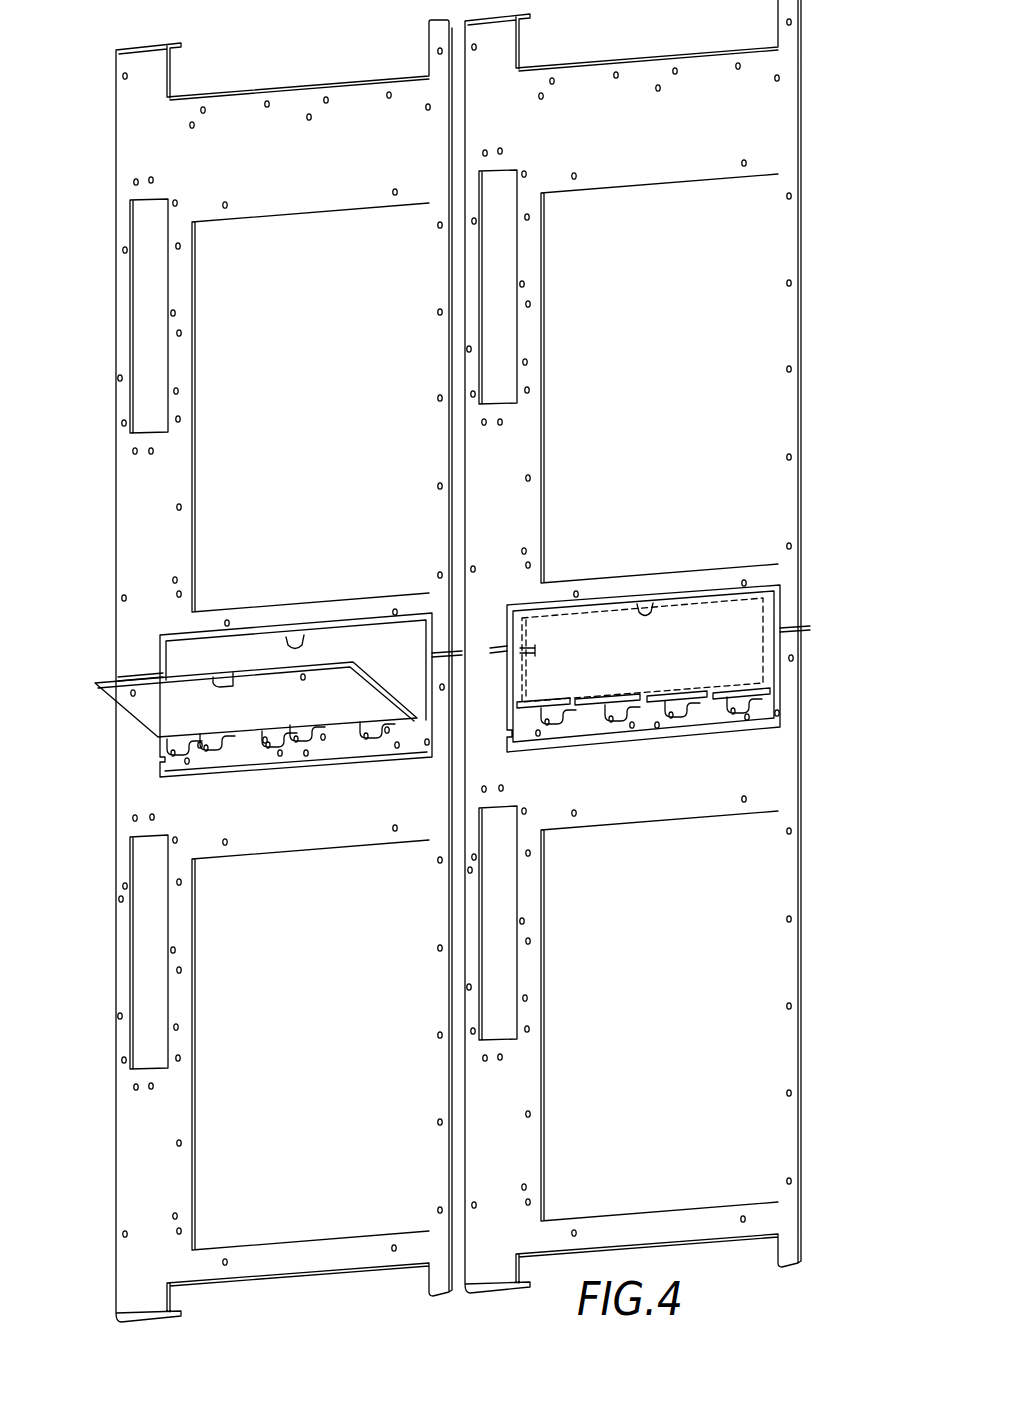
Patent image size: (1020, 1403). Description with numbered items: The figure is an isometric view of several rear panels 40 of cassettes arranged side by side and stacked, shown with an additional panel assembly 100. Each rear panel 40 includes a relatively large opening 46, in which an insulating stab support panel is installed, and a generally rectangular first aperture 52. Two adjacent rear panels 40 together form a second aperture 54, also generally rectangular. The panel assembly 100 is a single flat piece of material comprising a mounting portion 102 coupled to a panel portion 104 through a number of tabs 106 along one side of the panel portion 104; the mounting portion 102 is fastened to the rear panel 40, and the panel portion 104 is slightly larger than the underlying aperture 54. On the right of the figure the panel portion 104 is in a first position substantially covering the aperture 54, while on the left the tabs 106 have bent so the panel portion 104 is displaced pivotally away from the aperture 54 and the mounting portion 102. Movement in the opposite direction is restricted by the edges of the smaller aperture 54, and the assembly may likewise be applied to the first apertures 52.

The rear panel 40 is at (143, 120).
The opening 46 is at (220, 470).
The first aperture 52 is at (147, 305).
The second aperture 54 is at (262, 637).
The panel assembly 100 is at (469, 680).
The mounting portion 102 is at (226, 767).
The panel portion 104 is at (150, 714).
The tabs 106 is at (365, 734).